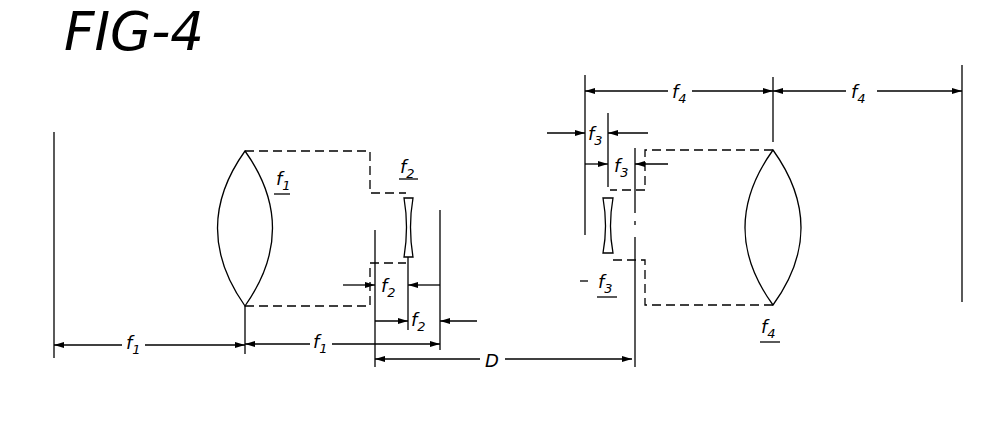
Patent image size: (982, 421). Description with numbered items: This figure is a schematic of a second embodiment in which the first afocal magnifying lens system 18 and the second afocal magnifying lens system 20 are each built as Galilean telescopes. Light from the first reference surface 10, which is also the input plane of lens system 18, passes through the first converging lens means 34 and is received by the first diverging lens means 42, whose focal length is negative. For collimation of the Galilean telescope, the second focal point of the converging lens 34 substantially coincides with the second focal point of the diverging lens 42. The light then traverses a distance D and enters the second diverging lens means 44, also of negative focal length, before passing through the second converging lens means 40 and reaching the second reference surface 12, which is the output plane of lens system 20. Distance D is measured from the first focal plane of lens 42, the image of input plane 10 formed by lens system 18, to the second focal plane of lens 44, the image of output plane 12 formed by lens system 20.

The first reference surface 10 is at (57, 160).
The second reference surface 12 is at (960, 274).
The first afocal magnifying lens system 18 is at (327, 157).
The second afocal magnifying lens system 20 is at (710, 160).
The first converging lens means 34 is at (218, 215).
The second converging lens means 40 is at (799, 262).
The first diverging lens means 42 is at (413, 213).
The second diverging lens means 44 is at (602, 243).